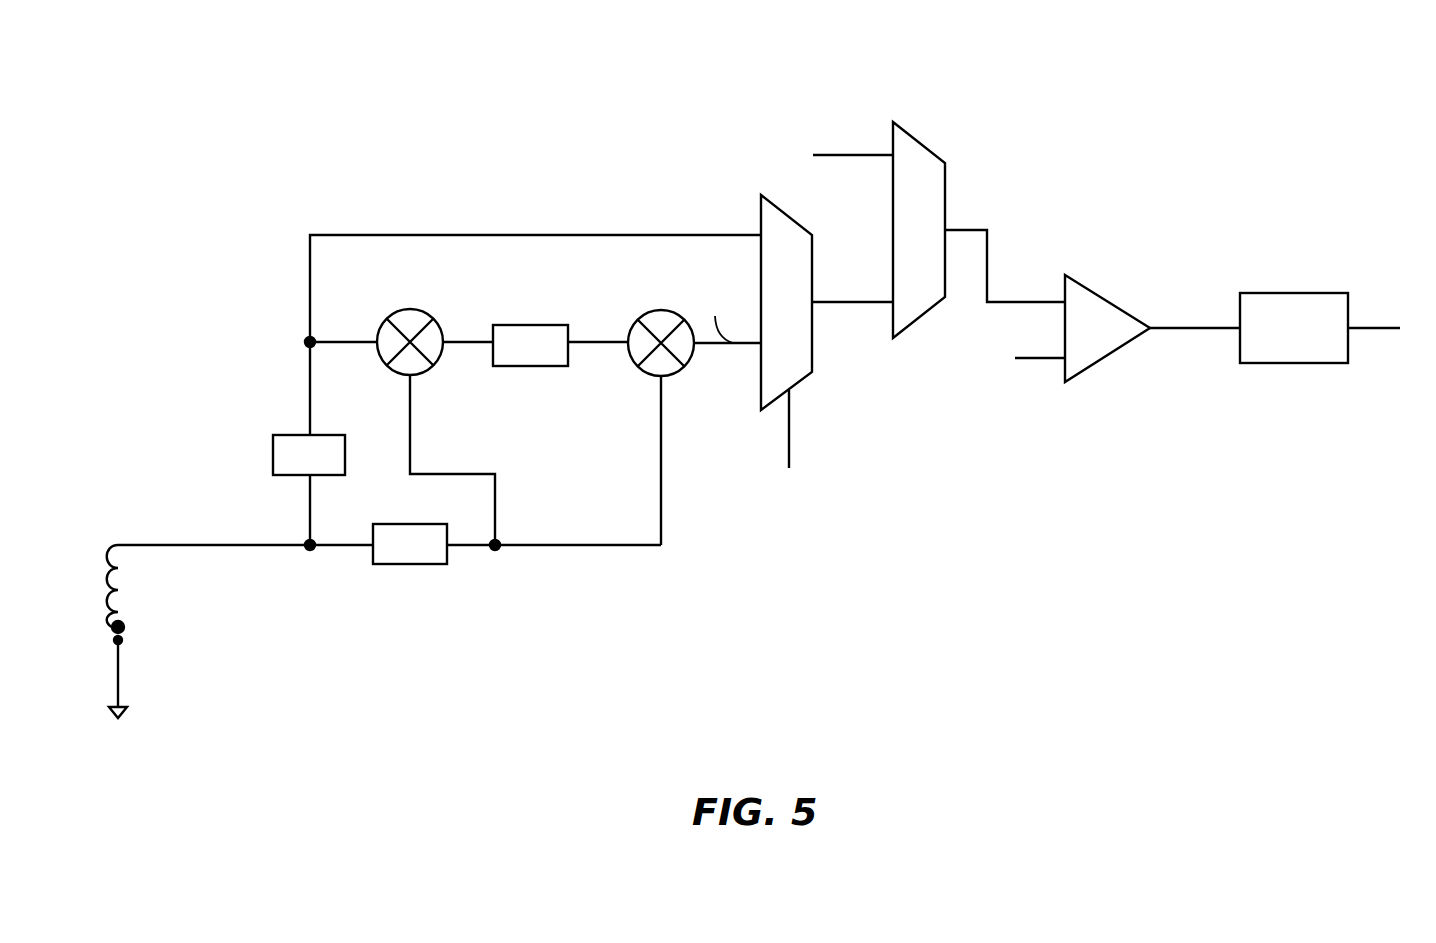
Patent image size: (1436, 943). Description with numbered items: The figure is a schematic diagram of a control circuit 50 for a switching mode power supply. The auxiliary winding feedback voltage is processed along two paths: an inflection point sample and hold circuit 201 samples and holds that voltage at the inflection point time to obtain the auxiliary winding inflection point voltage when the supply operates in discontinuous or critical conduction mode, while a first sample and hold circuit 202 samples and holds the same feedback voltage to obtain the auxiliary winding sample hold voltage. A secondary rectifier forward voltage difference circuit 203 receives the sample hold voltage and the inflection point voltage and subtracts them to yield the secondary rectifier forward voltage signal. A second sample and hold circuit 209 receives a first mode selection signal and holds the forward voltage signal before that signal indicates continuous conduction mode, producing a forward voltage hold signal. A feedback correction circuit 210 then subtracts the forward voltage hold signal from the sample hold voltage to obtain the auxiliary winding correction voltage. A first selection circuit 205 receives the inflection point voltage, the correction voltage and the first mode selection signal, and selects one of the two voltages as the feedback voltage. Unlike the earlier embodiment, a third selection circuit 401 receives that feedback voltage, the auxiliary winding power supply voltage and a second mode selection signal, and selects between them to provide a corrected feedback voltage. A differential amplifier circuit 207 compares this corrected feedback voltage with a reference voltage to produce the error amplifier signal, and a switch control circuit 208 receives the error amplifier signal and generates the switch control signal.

The control circuit 50 is at (1312, 100).
The inflection point sample and hold circuit 201 is at (309, 455).
The first sample and hold circuit 202 is at (410, 544).
The secondary rectifier forward voltage difference circuit 203 is at (388, 319).
The second sample and hold circuit 209 is at (530, 345).
The feedback correction circuit 210 is at (642, 319).
The first selection circuit 205 is at (786, 302).
The third selection circuit 401 is at (919, 230).
The differential amplifier circuit 207 is at (1107, 328).
The switch control circuit 208 is at (1294, 328).